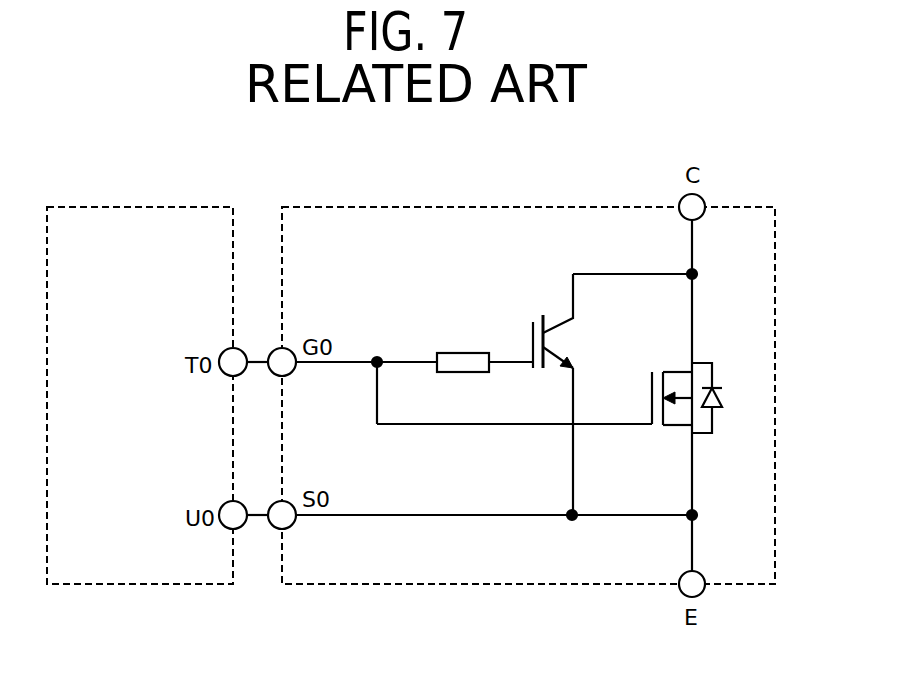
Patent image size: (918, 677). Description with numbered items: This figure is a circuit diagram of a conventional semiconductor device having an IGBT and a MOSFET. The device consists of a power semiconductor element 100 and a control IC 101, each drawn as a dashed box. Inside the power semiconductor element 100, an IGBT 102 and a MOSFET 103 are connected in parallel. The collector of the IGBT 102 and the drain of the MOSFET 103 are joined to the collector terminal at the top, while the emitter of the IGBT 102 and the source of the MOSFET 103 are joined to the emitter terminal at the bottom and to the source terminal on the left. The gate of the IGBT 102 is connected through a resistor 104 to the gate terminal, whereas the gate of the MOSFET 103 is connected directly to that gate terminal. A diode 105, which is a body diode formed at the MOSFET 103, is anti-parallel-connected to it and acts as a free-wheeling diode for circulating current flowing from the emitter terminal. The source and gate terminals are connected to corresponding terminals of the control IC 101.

The power semiconductor element 100 is at (480, 205).
The control IC 101 is at (145, 205).
The IGBT 102 is at (537, 313).
The MOSFET 103 is at (655, 371).
The resistor 104 is at (462, 352).
The diode 105 is at (725, 398).